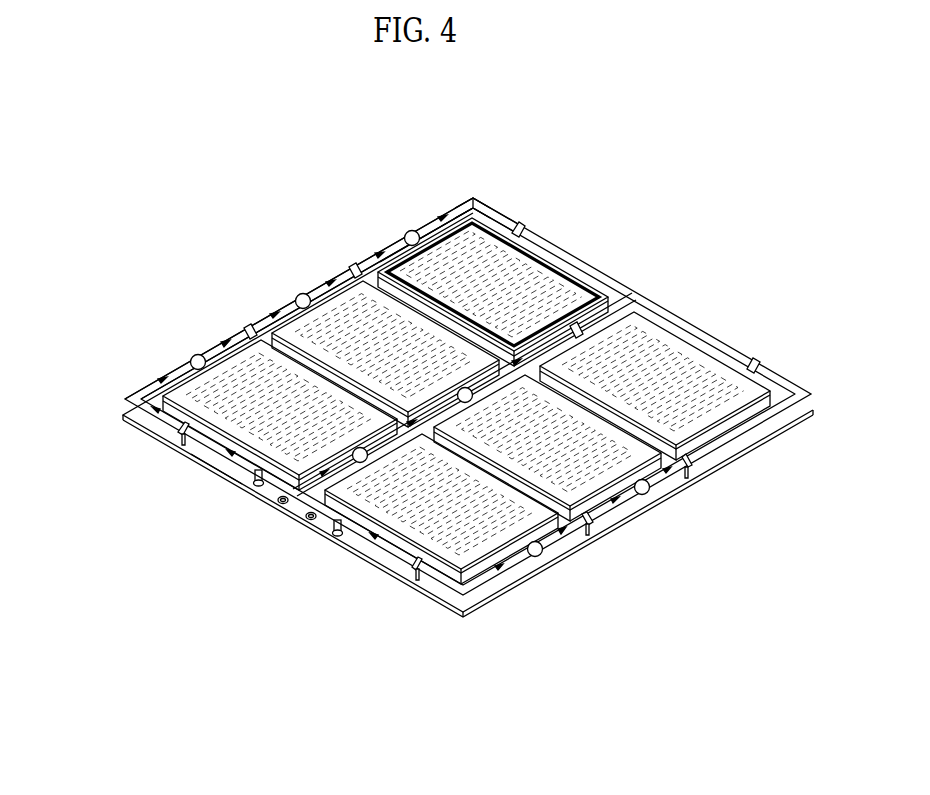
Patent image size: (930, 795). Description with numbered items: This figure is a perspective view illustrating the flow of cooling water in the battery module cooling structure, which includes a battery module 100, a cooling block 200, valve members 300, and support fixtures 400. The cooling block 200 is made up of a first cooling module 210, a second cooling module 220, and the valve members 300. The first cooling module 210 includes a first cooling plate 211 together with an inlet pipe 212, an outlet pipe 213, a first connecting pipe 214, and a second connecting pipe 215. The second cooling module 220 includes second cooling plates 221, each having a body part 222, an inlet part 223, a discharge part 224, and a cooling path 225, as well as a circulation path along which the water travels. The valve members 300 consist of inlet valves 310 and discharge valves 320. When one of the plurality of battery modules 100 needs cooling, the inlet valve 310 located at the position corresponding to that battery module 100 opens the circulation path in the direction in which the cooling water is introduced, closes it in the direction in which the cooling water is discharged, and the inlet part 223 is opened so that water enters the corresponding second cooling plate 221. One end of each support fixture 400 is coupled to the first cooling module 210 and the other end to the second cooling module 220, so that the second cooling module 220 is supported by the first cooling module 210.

The battery module 100 is at (466, 352).
The cooling block 200 is at (92, 513).
The first cooling module 210 is at (293, 630).
The first cooling plate 211 is at (215, 466).
The inlet pipe 212 is at (283, 503).
The outlet pipe 213 is at (312, 520).
The first connecting pipe 214 is at (258, 483).
The second connecting pipe 215 is at (337, 533).
The second cooling module 220 is at (435, 358).
The second cooling plate 221 is at (637, 203).
The body part 222 is at (484, 210).
The inlet part 223 is at (474, 197).
The discharge part 224 is at (570, 327).
The cooling path 225 is at (518, 228).
The valve member 300 is at (506, 623).
The inlet valve 310 is at (532, 550).
The discharge valve 320 is at (412, 606).
The support fixture 400 is at (695, 475).